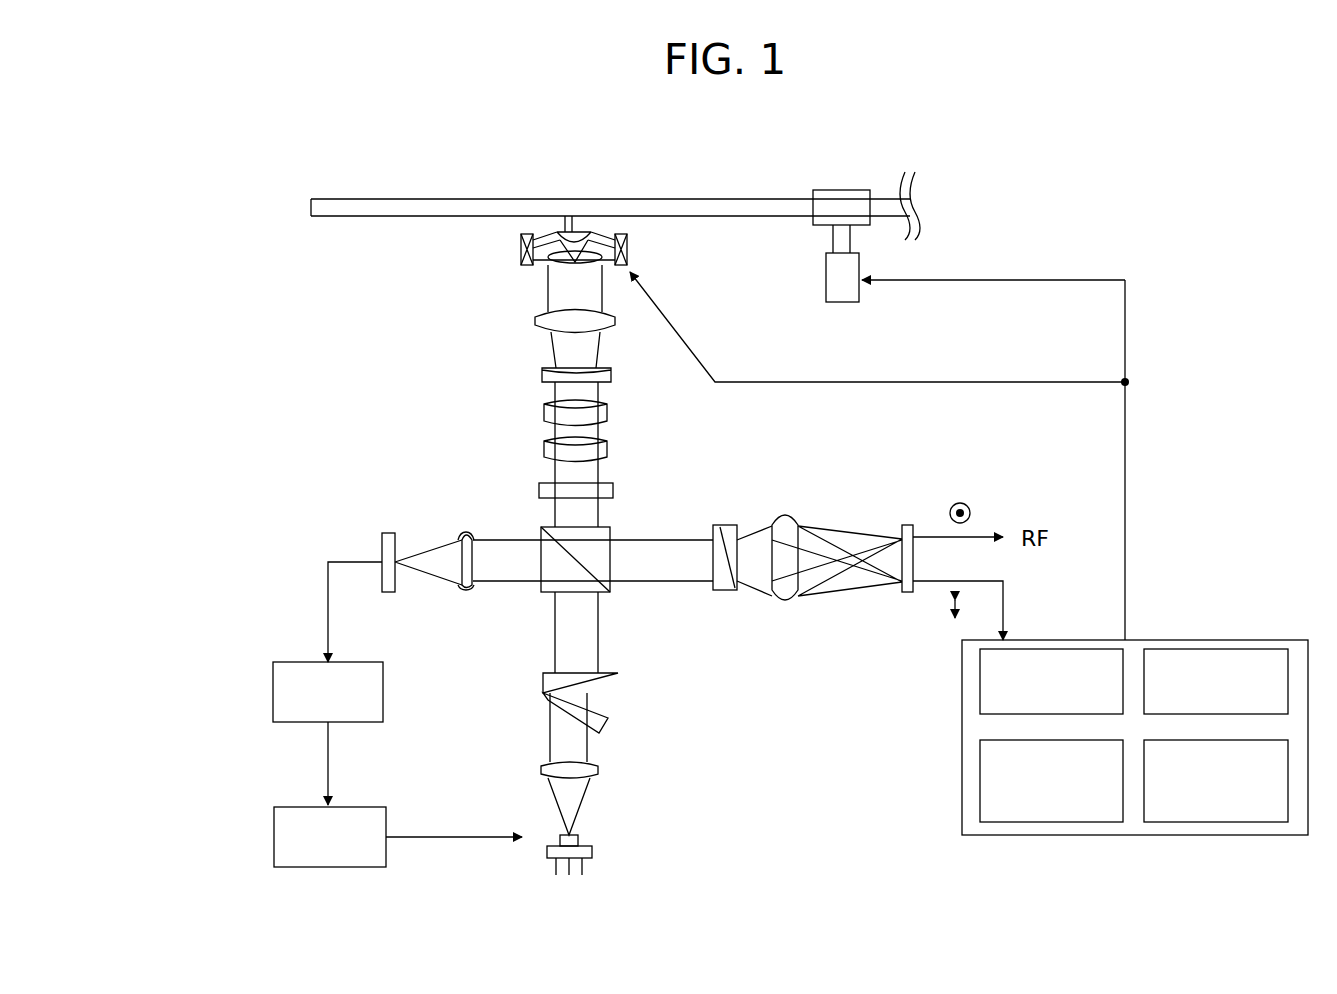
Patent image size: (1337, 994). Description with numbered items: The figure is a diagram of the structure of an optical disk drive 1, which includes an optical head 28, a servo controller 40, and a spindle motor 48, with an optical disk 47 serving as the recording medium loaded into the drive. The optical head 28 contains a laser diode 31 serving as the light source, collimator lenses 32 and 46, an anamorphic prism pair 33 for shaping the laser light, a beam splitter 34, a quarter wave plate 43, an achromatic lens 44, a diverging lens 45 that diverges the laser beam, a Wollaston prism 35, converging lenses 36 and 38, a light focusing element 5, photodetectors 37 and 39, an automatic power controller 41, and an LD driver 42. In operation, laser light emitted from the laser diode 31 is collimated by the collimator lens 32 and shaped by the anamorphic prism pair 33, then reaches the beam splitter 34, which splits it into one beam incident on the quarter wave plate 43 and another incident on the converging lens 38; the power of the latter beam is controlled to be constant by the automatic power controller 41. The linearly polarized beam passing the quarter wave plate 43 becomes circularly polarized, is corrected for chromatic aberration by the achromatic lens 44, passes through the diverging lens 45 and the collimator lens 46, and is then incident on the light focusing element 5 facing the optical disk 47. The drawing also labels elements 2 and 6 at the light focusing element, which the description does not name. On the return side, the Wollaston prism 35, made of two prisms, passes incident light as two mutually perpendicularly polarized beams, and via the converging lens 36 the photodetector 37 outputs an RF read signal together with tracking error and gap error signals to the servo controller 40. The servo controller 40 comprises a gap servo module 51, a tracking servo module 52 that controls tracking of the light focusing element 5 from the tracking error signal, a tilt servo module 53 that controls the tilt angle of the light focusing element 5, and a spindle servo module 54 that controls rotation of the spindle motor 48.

The optical disk drive 1 is at (1113, 160).
The solid immersion lens 2 is at (567, 230).
The light focusing element 5 is at (574, 212).
The actuator 6 is at (630, 256).
The optical head 28 is at (348, 332).
The laser diode 31 is at (594, 851).
The collimator lens 32 is at (600, 770).
The anamorphic prism pair 33 is at (543, 690).
The beam splitter 34 is at (612, 530).
The Wollaston prism 35 is at (725, 592).
The converging lens 36 is at (785, 600).
The photodetector 37 is at (908, 593).
The converging lens 38 is at (467, 592).
The photodetector 39 is at (390, 532).
The servo controller 40 is at (1135, 739).
The automatic power controller 41 is at (273, 692).
The LD driver 42 is at (274, 835).
The quarter wave plate 43 is at (539, 492).
The achromatic lens 44 is at (533, 400).
The diverging lens 45 is at (542, 375).
The collimator lens 46 is at (538, 322).
The optical disk 47 is at (392, 198).
The spindle motor 48 is at (826, 286).
The gap servo module 51 is at (1055, 648).
The tracking servo module 52 is at (1055, 823).
The tilt servo module 53 is at (1230, 648).
The spindle servo module 54 is at (1220, 823).